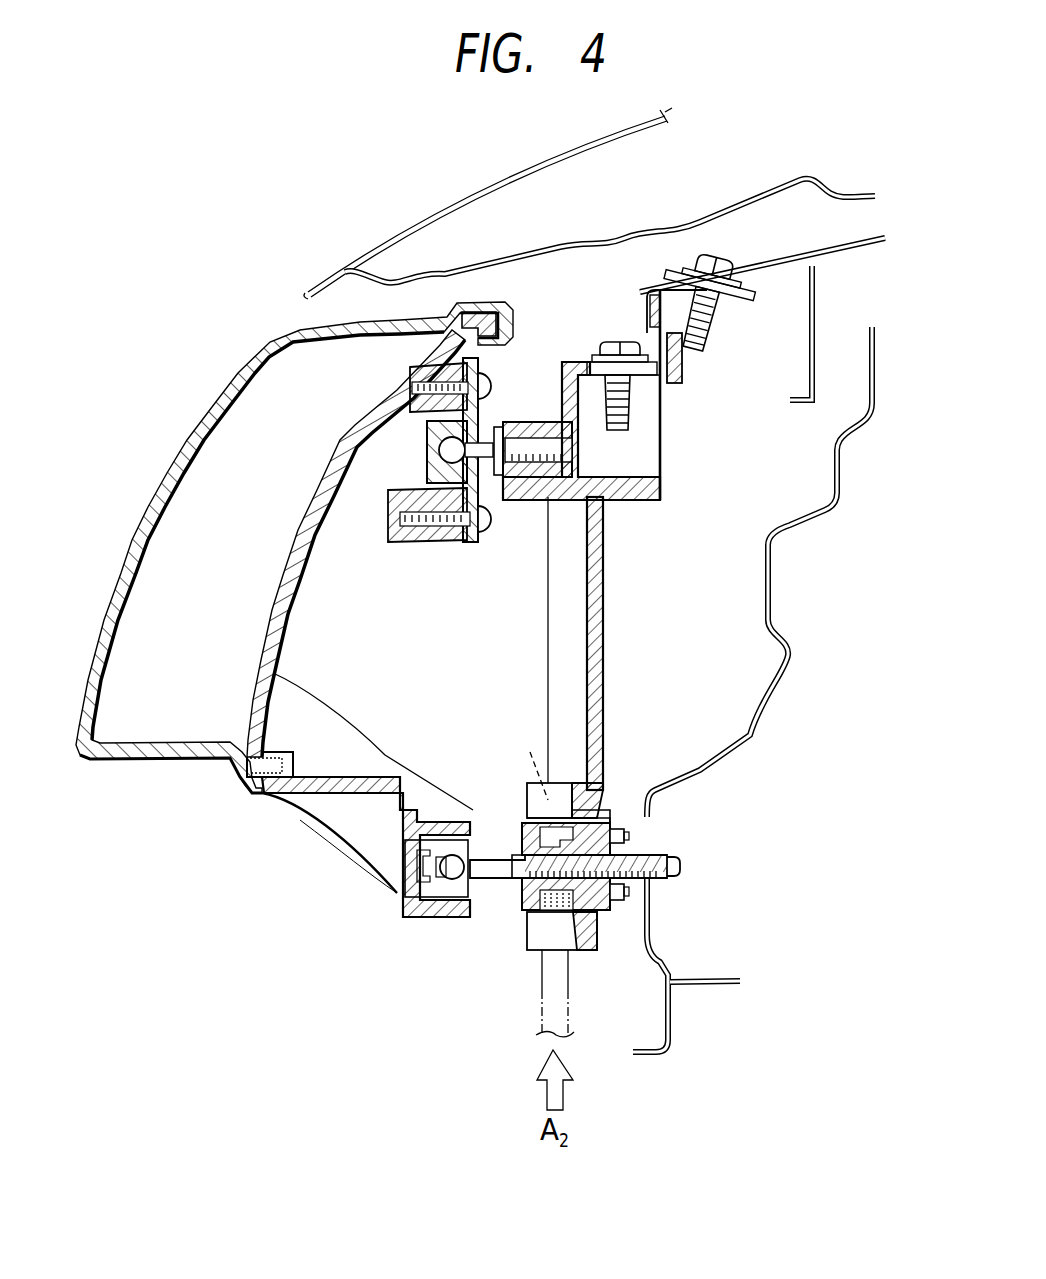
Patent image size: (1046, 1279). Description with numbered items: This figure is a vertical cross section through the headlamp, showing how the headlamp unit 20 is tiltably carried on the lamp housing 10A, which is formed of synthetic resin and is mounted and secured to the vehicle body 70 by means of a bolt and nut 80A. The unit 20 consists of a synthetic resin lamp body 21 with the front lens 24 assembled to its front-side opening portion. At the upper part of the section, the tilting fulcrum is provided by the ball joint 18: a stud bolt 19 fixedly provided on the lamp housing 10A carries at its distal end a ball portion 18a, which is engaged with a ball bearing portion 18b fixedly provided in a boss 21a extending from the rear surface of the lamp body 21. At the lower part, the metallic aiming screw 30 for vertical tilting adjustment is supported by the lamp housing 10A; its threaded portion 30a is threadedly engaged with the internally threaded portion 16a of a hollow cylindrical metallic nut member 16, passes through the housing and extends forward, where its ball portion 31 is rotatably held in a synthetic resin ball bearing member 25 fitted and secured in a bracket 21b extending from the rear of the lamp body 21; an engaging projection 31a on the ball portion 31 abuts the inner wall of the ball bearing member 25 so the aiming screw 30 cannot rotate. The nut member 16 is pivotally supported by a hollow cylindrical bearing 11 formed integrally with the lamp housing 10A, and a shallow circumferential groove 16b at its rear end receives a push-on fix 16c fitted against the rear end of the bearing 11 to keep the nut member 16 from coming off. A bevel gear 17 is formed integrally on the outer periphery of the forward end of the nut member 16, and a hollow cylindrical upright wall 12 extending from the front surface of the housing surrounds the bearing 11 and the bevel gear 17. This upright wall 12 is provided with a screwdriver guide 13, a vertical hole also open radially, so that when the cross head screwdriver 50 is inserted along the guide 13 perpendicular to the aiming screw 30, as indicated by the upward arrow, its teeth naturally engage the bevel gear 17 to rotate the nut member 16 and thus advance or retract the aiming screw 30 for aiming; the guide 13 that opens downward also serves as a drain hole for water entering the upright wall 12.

The lamp housing 10A is at (603, 617).
The hollow cylindrical bearing 11 is at (602, 813).
The hollow cylindrical upright wall 12 is at (614, 940).
The screwdriver guide 13 is at (570, 775).
The nut member 16 is at (606, 850).
The internally threaded portion 16a is at (523, 835).
The shallow groove 16b is at (629, 838).
The push-on fix 16c is at (629, 893).
The bevel gear 17 is at (515, 905).
The ball joint 18 is at (357, 448).
The ball portion 18a is at (440, 452).
The ball bearing portion 18b is at (427, 427).
The stud bolt 19 is at (498, 438).
The headlamp unit 20 is at (134, 565).
The lamp body 21 is at (298, 605).
The boss 21a is at (452, 345).
The bracket 21b is at (343, 792).
The front lens 24 is at (112, 640).
The ball bearing member 25 is at (398, 888).
The aiming screw 30 is at (615, 901).
The threaded portion 30a is at (682, 864).
The ball portion 31 is at (377, 905).
The engaging projection 31a is at (420, 862).
The cross head screwdriver 50 is at (572, 1002).
The vehicle body 70 is at (835, 263).
The bolt and nut 80A is at (705, 262).